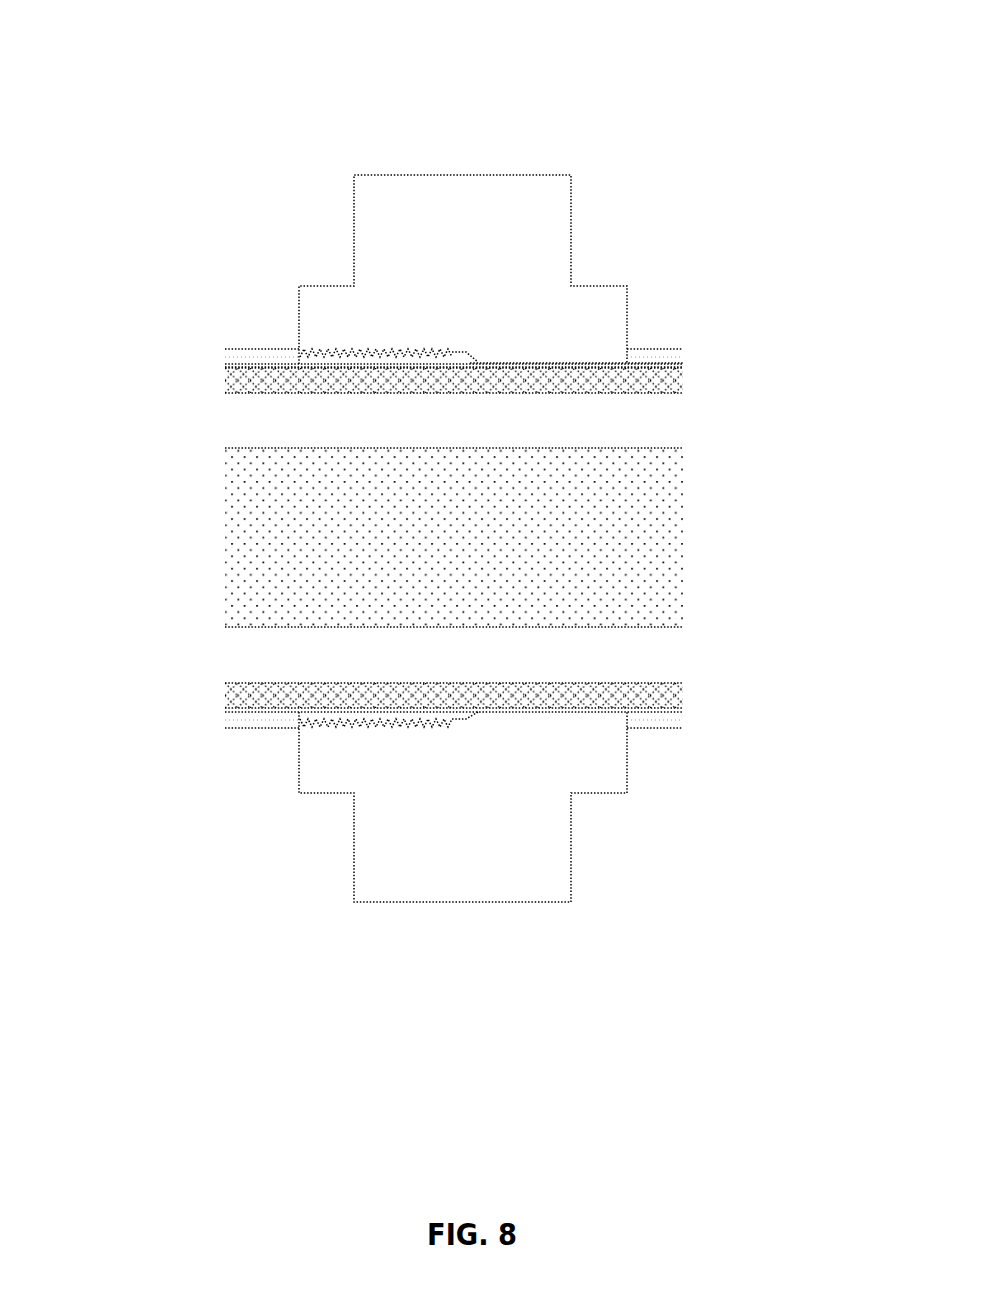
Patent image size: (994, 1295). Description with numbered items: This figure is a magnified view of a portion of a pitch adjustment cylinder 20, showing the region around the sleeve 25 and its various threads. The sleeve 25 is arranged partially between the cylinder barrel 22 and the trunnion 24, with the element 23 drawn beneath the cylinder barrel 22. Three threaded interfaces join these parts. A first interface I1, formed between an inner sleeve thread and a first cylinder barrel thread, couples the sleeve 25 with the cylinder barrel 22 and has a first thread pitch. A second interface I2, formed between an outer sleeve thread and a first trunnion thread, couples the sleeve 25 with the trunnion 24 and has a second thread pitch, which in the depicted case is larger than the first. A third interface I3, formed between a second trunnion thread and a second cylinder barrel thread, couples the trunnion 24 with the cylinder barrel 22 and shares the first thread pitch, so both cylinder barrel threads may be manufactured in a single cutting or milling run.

The semiconductor device 20 is at (98, 98).
The cylinder barrel 22 is at (526, 344).
The second substrate layer 23 is at (650, 492).
The trunnion 24 is at (552, 222).
The sleeve 25 is at (296, 361).
The first interface I1 is at (454, 217).
The second interface I2 is at (352, 345).
The third interface I3 is at (548, 353).